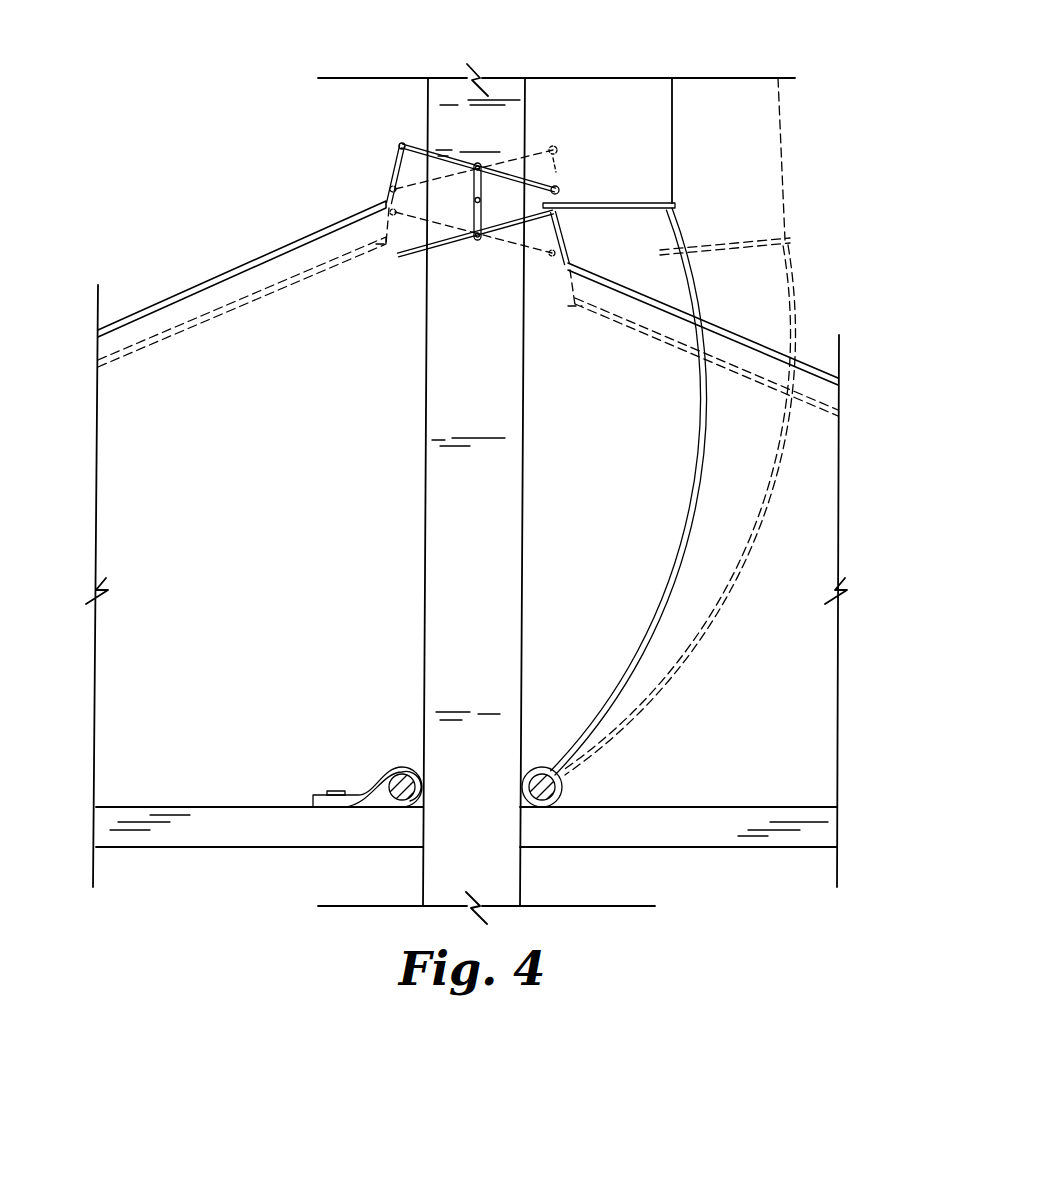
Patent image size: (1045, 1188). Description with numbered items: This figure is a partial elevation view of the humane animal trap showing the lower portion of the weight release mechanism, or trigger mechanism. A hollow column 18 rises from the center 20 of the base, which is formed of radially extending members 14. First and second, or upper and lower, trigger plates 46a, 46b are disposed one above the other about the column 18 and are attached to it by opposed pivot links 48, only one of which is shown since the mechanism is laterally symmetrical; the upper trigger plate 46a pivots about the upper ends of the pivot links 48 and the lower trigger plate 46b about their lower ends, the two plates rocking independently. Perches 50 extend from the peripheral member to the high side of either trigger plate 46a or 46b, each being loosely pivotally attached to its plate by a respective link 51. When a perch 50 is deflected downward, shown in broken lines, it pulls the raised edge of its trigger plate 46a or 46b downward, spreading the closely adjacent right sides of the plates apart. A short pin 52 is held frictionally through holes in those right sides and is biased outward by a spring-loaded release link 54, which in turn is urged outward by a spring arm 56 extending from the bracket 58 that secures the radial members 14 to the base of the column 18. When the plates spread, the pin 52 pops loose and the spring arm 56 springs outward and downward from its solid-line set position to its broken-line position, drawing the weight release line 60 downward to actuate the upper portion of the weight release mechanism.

The radially extending members 14 is at (172, 806).
The hollow column 18 is at (486, 356).
The center 20 is at (394, 740).
The first trigger plate 46a is at (432, 150).
The second trigger plate 46b is at (443, 253).
The pivot link 48 is at (473, 204).
The perch 50 is at (300, 272).
The link 51 is at (370, 183).
The pin 52 is at (558, 150).
The release link 54 is at (658, 203).
The spring arm 56 is at (782, 432).
The bracket 58 is at (545, 768).
The weight release line 60 is at (672, 105).